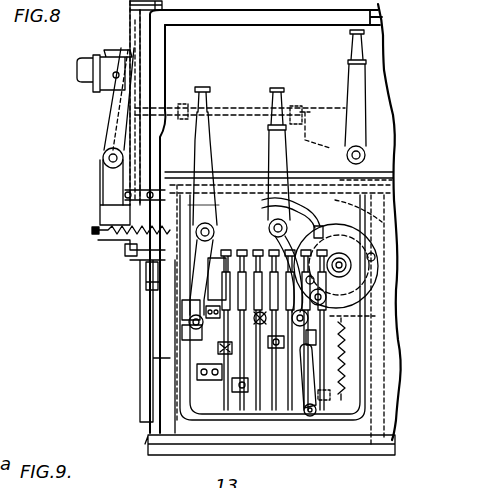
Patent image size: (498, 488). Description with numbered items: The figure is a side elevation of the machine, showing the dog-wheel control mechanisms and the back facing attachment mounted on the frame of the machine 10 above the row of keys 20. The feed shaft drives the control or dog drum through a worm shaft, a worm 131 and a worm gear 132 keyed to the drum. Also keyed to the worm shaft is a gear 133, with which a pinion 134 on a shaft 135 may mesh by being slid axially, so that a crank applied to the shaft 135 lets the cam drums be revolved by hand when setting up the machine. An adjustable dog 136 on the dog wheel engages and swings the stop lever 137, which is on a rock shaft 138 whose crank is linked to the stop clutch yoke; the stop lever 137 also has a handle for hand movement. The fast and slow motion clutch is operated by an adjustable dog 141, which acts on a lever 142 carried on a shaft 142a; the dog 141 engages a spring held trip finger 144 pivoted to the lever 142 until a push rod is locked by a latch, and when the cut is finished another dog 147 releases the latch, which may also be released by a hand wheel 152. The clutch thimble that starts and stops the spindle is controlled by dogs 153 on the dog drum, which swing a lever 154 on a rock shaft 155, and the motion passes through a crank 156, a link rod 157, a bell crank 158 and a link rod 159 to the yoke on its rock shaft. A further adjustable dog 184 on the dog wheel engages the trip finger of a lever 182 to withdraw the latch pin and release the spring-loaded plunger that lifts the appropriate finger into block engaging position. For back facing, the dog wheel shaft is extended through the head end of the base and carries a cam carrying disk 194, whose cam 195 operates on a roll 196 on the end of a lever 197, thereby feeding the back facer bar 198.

The machine frame 10 is at (243, 39).
The back facer bar 198 is at (80, 70).
The lever 197 is at (106, 118).
The roll 196 is at (95, 238).
The cam 195 is at (128, 256).
The cam carrying disk 194 is at (146, 278).
The lever 182 is at (217, 262).
The hand wheel 152 is at (212, 313).
The trip finger 144 is at (185, 328).
The dog 184 is at (254, 320).
The dog 147 is at (197, 372).
The dog 141 is at (238, 386).
The shaft 142a is at (214, 204).
The lever 142 is at (188, 205).
The keys 20 is at (250, 262).
The rock shaft 138 is at (340, 150).
The stop lever 137 is at (325, 230).
The link rod 159 is at (300, 114).
The bell crank 158 is at (333, 142).
The link rod 157 is at (392, 180).
The worm 131 is at (384, 222).
The gear 133 is at (378, 252).
The shaft 135 is at (326, 300).
The pinion 134 is at (376, 316).
The dogs 153 is at (322, 366).
The worm gear 132 is at (350, 382).
The lever 154 is at (330, 396).
The rock shaft 155 is at (302, 430).
The crank 156 is at (344, 448).
The dog 136 is at (262, 405).